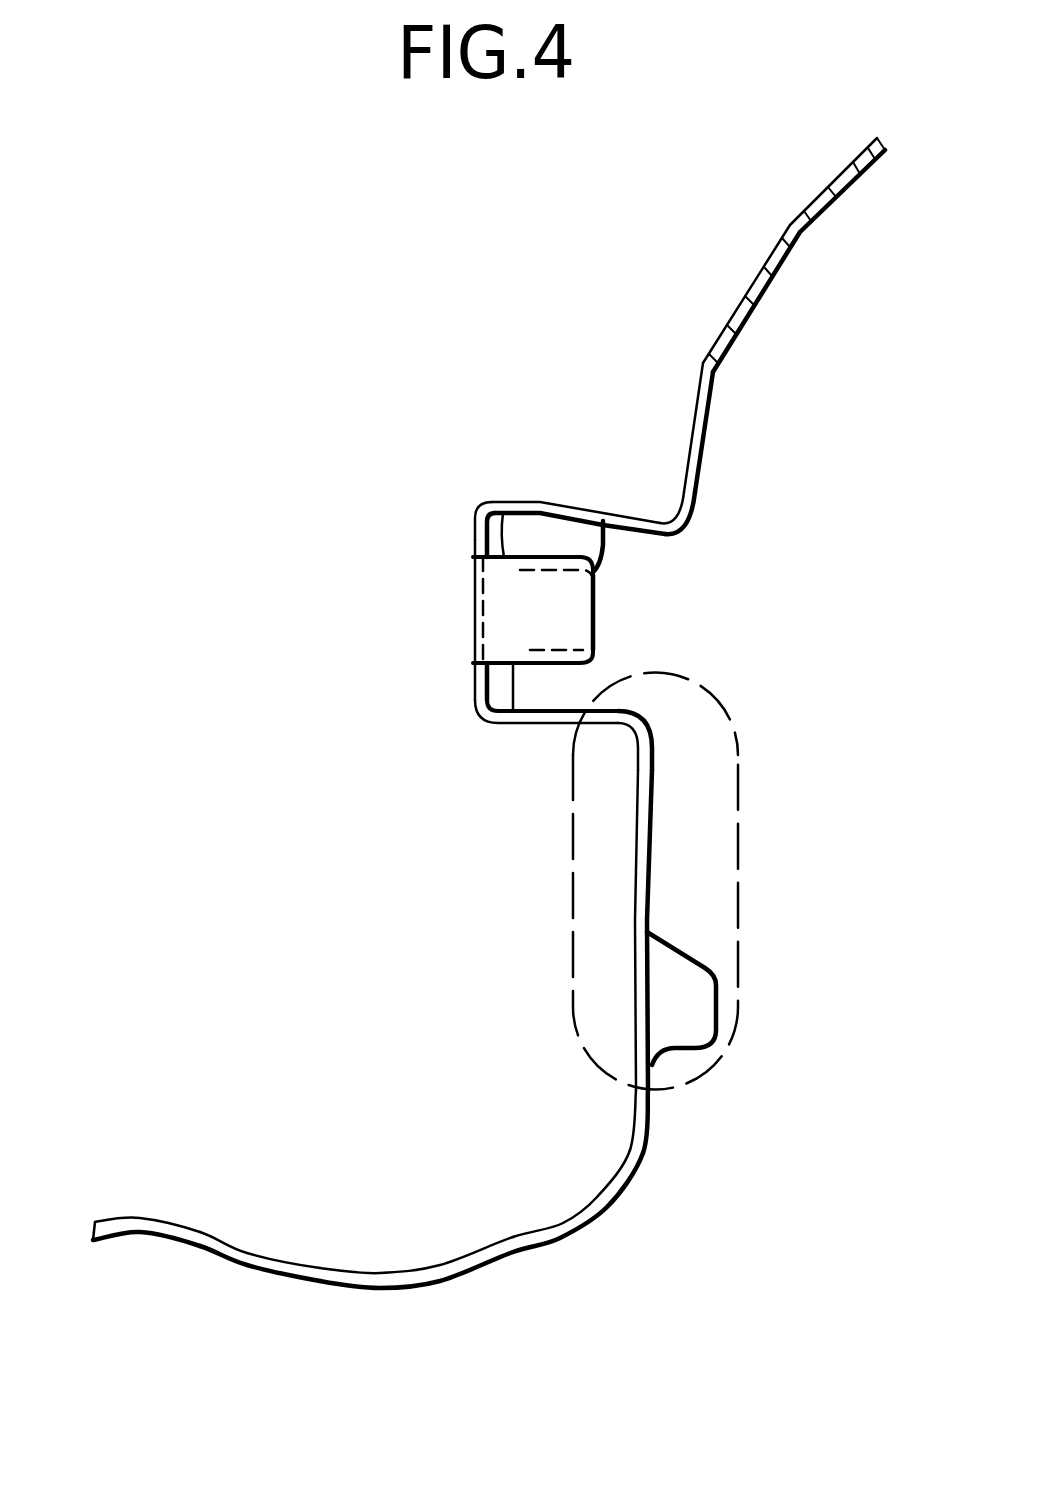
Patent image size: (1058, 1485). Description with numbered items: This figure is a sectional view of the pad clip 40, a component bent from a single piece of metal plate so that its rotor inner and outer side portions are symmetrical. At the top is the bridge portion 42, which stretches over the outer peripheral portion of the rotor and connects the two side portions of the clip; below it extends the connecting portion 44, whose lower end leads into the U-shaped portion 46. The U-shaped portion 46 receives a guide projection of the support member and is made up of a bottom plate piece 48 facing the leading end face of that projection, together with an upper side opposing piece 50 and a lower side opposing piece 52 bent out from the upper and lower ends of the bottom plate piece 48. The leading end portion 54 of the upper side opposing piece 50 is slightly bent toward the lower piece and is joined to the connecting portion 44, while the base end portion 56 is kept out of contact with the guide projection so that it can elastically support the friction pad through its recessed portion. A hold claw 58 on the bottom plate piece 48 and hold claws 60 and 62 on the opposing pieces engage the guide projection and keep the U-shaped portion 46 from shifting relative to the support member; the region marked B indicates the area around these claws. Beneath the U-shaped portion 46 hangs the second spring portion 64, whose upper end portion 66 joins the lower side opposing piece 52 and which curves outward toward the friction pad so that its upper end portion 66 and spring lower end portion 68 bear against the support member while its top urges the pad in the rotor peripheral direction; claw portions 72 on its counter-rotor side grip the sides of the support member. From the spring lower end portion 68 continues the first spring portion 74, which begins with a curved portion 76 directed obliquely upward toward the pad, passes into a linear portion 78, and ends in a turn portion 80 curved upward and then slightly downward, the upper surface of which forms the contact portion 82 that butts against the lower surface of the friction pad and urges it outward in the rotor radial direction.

The pad clip 40 is at (638, 335).
The bridge portion 42 is at (778, 271).
The connecting portion 44 is at (705, 456).
The U-shaped portion 46 is at (452, 576).
The bottom plate piece 48 is at (473, 700).
The upper side opposing piece 50 is at (594, 510).
The lower side opposing piece 52 is at (508, 727).
The leading end portion 54 is at (668, 542).
The base end portion 56 is at (491, 500).
The hold claw 58 is at (597, 622).
The hold claw 60 is at (606, 568).
The hold claw 62 is at (617, 688).
The second spring portion 64 is at (668, 875).
The upper end portion 66 is at (658, 738).
The spring lower end portion 68 is at (654, 1098).
The claw portion 72 is at (712, 968).
The first spring portion 74 is at (580, 1262).
The curved portion 76 is at (610, 1212).
The linear portion 78 is at (483, 1253).
The turn portion 80 is at (247, 1262).
The contact portion 82 is at (116, 1218).
The region B is at (573, 937).